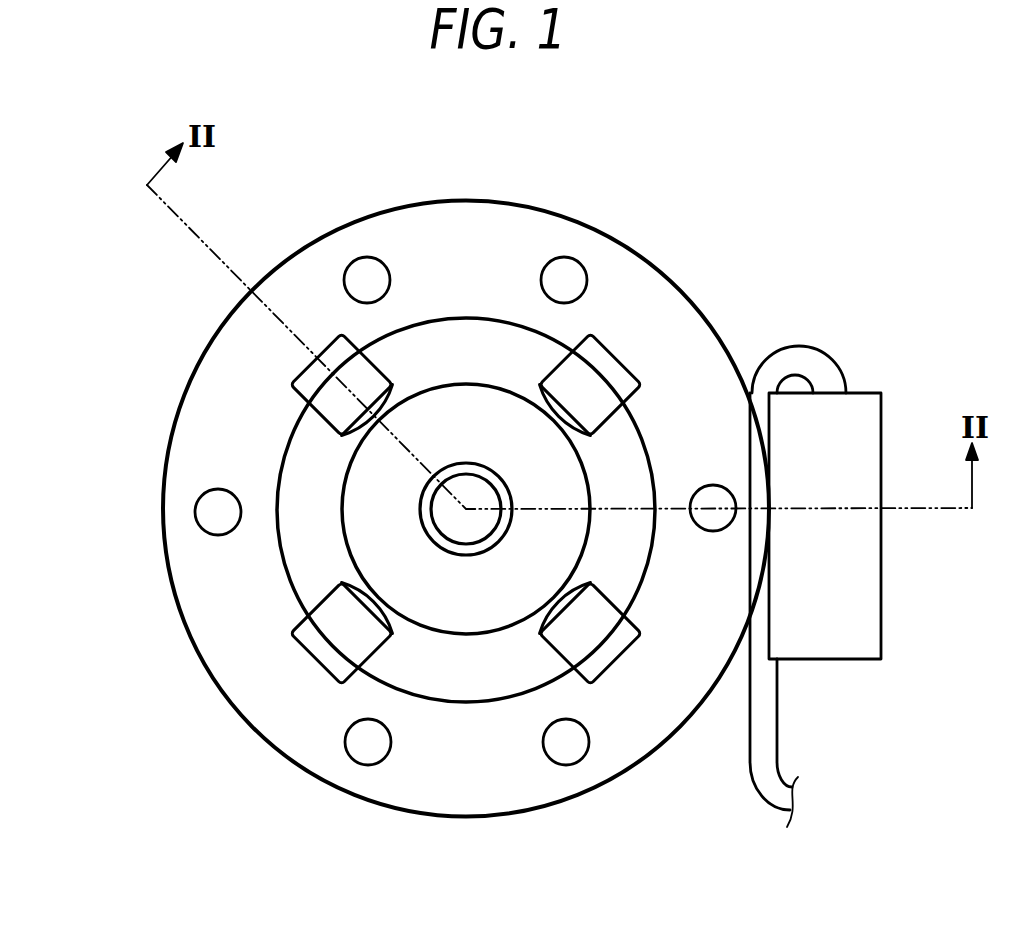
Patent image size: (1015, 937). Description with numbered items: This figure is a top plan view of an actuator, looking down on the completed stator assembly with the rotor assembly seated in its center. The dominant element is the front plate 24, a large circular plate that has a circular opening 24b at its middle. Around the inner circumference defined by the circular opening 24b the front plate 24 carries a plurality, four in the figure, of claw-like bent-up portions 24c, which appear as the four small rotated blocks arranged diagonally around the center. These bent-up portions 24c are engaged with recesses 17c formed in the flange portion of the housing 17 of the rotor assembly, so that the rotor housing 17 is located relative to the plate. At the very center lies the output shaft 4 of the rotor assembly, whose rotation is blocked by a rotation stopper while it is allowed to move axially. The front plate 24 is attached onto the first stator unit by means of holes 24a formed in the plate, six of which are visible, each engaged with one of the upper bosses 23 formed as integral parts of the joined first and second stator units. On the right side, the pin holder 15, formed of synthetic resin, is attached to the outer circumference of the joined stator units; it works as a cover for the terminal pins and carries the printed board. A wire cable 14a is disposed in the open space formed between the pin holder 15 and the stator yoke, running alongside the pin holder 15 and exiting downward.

The output shaft 4 is at (458, 523).
The wire cable 14a is at (763, 700).
The pin holder 15 is at (862, 587).
The housing 17 is at (622, 453).
The recesses 17c is at (392, 377).
The upper bosses 23 is at (367, 280).
The front plate 24 is at (200, 415).
The holes 24a is at (382, 263).
The circular opening 24b is at (277, 485).
The bent-up portions 24c is at (323, 395).